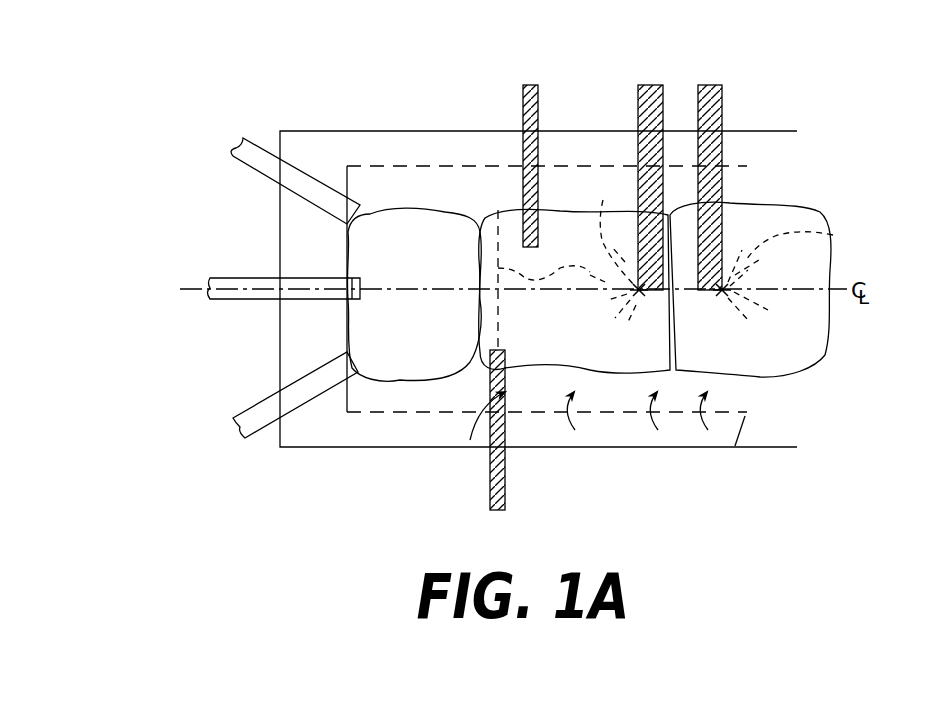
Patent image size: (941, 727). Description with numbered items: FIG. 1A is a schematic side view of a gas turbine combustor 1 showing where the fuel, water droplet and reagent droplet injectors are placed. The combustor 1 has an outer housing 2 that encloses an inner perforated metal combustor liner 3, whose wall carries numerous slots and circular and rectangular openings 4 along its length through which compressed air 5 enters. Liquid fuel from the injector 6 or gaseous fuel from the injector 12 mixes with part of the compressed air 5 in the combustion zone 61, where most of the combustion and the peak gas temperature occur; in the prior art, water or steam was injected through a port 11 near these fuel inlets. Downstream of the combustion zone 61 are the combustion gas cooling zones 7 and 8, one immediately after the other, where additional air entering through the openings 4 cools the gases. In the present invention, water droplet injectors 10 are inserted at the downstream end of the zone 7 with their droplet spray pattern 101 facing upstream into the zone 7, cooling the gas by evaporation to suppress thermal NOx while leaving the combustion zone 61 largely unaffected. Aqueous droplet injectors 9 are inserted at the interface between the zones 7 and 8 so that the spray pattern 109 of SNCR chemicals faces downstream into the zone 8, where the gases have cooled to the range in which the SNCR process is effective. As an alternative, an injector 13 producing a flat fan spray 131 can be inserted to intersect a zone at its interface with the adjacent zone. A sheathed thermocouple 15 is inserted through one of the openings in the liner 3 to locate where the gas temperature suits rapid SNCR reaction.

The combustor 1 is at (207, 475).
The outer housing 2 is at (685, 448).
The combustor liner 3 is at (738, 450).
The openings 4 is at (401, 392).
The compressed air 5 is at (502, 186).
The liquid fuel injector 6 is at (228, 300).
The combustion gas cooling zone 7 is at (574, 291).
The combustion gas cooling zone 8 is at (750, 289).
The aqueous droplet injector 9 is at (722, 112).
The water droplet injector 10 is at (640, 100).
The port 11 is at (256, 170).
The gas fuel injector 12 is at (267, 428).
The flat fan spray injector 13 is at (505, 495).
The thermocouple 15 is at (523, 100).
The combustion zone 61 is at (414, 294).
The droplet spray pattern 101 is at (607, 246).
The spray pattern 109 is at (836, 235).
The flat fan spray 131 is at (544, 258).